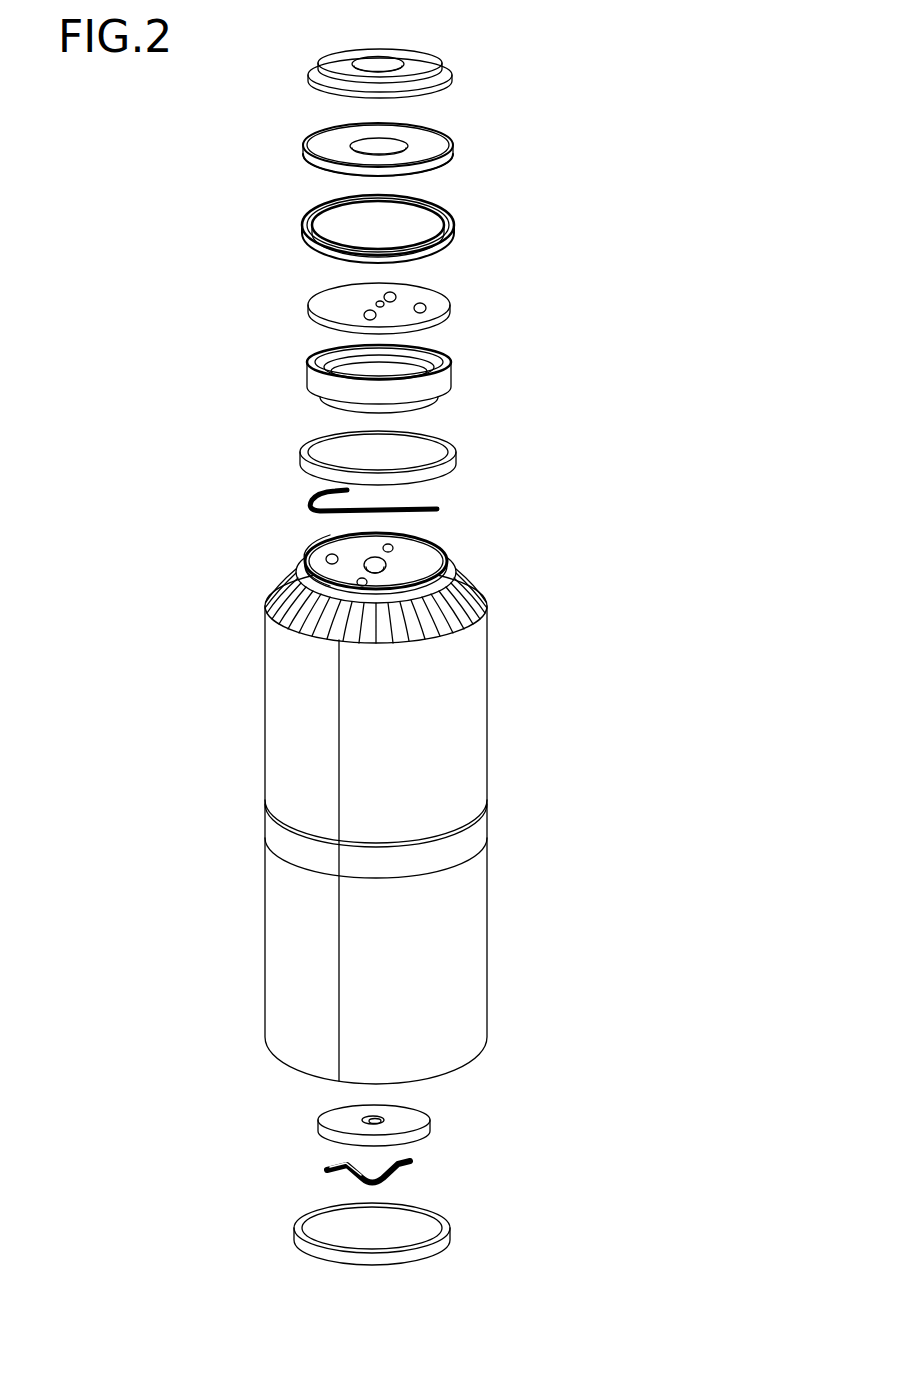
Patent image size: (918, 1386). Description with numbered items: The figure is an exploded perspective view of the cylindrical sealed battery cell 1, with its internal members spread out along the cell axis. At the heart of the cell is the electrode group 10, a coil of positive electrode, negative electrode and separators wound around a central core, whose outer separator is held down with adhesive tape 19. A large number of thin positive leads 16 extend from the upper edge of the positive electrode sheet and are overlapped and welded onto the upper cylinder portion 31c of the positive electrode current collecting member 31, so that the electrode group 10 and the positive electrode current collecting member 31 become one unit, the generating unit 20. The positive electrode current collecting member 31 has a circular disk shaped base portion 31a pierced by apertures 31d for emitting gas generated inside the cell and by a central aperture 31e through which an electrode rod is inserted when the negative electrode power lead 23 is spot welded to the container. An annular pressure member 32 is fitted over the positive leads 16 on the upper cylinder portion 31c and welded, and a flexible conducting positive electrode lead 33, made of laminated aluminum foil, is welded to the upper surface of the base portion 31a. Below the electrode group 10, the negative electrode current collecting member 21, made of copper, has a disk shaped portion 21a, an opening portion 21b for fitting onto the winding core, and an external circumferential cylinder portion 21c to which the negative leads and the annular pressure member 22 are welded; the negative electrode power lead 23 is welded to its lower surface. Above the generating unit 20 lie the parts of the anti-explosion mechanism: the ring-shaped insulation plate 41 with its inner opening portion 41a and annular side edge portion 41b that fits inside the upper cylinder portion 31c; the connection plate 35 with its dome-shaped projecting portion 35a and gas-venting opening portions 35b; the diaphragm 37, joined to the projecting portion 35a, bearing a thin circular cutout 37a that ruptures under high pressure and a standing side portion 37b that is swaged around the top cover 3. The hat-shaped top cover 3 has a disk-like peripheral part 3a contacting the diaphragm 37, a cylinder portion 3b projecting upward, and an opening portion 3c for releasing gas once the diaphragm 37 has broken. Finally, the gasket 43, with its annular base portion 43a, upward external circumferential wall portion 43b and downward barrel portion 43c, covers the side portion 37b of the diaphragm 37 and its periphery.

The cylindrical sealed battery cell 1 is at (685, 142).
The top cover 3 is at (425, 55).
The peripheral part 3a is at (445, 78).
The cylinder portion 3b is at (427, 60).
The opening portion 3c is at (367, 62).
The diaphragm 37 is at (389, 149).
The cutout 37a is at (305, 146).
The side portion 37b is at (447, 162).
The insulation plate 41 is at (375, 226).
The inner opening portion 41a is at (317, 218).
The annular side edge portion 41b is at (333, 258).
The connection plate 35 is at (373, 302).
The projecting portion 35a is at (385, 304).
The opening portions 35b is at (420, 310).
The gasket 43 is at (365, 381).
The annular base portion 43a is at (327, 370).
The external circumferential wall portion 43b is at (323, 388).
The barrel portion 43c is at (415, 403).
The annular pressure member 32 is at (453, 458).
The conducting positive electrode lead 33 is at (308, 505).
The generating unit 20 is at (664, 570).
The positive electrode current collecting member 31 is at (342, 557).
The base portion 31a is at (307, 555).
The upper cylinder portion 31c is at (310, 568).
The apertures 31d is at (320, 553).
The aperture 31e is at (390, 563).
The positive leads 16 is at (310, 615).
The electrode group 10 is at (471, 909).
The adhesive tape 19 is at (475, 832).
The negative electrode current collecting member 21 is at (279, 1138).
The disk shaped portion 21a is at (345, 1110).
The opening portion 21b is at (363, 1118).
The external circumferential cylinder portion 21c is at (323, 1130).
The negative electrode power lead 23 is at (403, 1158).
The annular pressure member 22 is at (448, 1243).